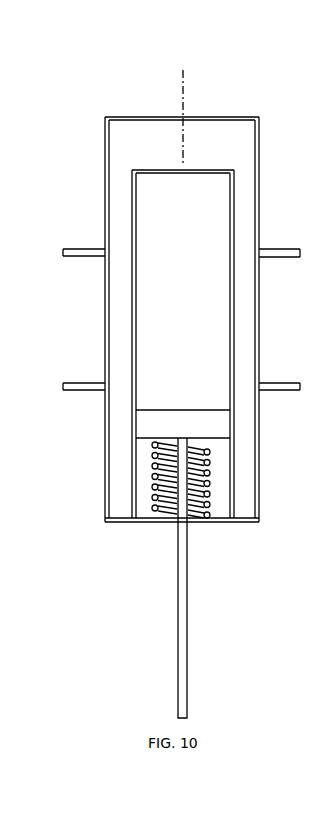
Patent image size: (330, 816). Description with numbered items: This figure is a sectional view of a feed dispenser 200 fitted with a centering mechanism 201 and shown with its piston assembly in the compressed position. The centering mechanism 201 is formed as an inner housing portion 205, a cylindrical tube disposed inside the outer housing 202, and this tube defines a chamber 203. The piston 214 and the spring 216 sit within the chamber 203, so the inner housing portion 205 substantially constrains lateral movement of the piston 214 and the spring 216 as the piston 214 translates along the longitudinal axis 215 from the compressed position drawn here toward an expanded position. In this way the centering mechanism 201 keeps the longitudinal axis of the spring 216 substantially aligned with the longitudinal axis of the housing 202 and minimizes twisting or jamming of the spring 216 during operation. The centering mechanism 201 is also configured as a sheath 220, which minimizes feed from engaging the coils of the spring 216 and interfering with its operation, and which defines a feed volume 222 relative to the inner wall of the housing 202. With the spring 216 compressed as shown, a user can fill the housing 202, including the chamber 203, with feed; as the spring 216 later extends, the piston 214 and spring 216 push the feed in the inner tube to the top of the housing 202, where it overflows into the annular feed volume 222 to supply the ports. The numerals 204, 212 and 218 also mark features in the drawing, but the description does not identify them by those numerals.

The feed dispenser 200 is at (249, 80).
The centering mechanism 201 is at (234, 161).
The housing 202 is at (259, 224).
The chamber 203 is at (203, 292).
The spring chamber 204 is at (128, 457).
The inner housing portion 205 is at (132, 317).
The right mounting pins 212 is at (288, 381).
The piston 214 is at (150, 426).
The longitudinal axis 215 is at (183, 92).
The spring 216 is at (196, 518).
The piston rod 218 is at (188, 632).
The sheath 220 is at (232, 337).
The feed volume 222 is at (248, 426).